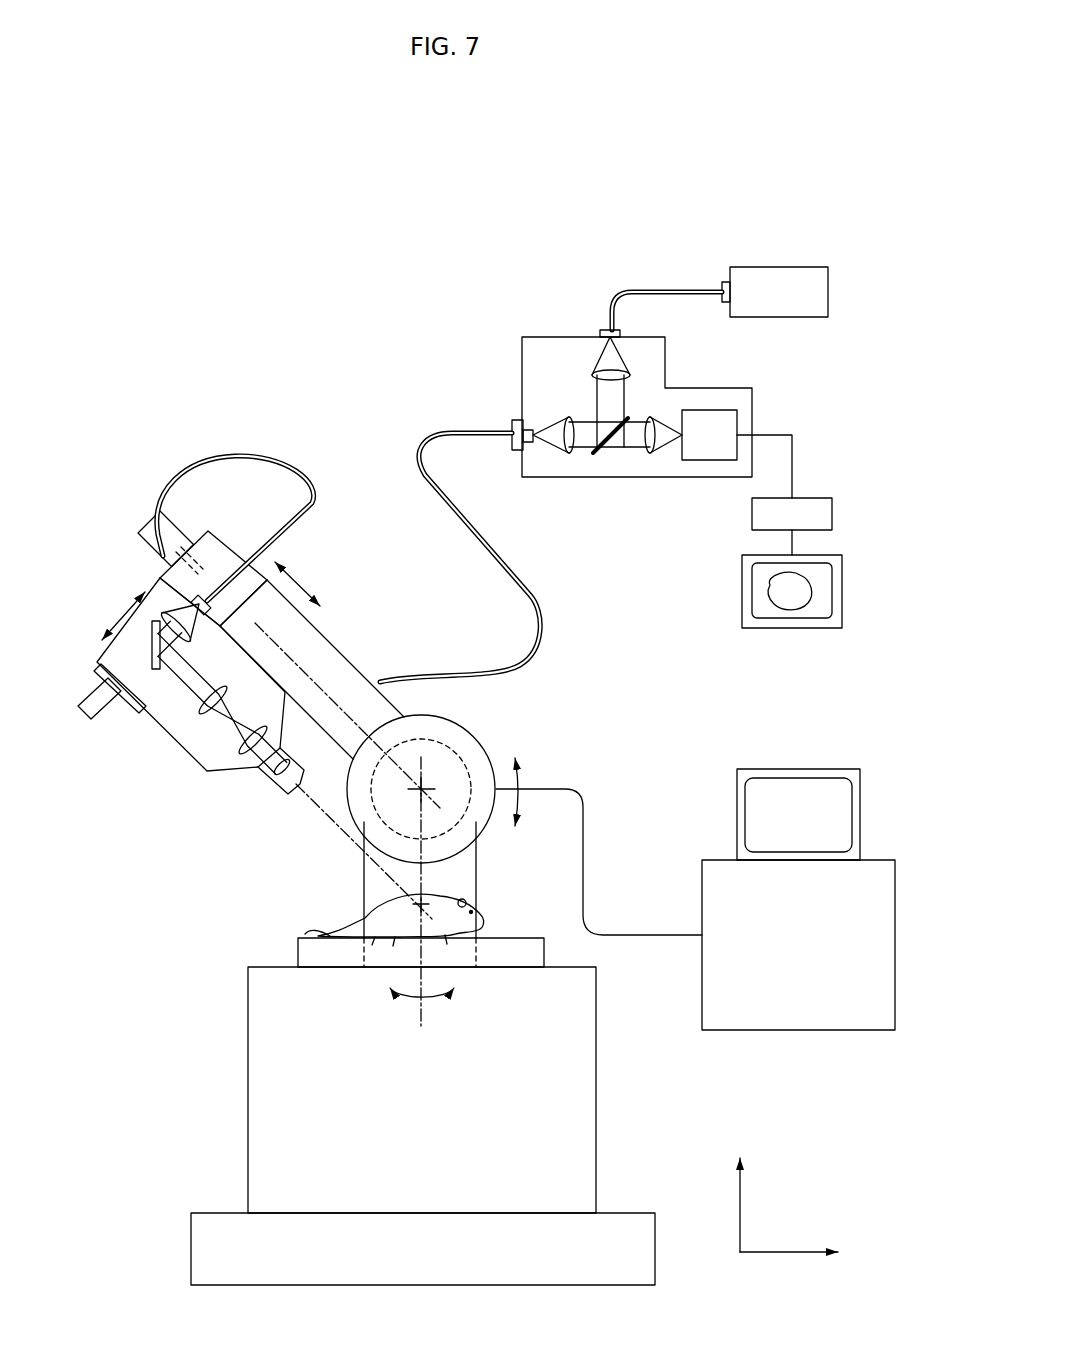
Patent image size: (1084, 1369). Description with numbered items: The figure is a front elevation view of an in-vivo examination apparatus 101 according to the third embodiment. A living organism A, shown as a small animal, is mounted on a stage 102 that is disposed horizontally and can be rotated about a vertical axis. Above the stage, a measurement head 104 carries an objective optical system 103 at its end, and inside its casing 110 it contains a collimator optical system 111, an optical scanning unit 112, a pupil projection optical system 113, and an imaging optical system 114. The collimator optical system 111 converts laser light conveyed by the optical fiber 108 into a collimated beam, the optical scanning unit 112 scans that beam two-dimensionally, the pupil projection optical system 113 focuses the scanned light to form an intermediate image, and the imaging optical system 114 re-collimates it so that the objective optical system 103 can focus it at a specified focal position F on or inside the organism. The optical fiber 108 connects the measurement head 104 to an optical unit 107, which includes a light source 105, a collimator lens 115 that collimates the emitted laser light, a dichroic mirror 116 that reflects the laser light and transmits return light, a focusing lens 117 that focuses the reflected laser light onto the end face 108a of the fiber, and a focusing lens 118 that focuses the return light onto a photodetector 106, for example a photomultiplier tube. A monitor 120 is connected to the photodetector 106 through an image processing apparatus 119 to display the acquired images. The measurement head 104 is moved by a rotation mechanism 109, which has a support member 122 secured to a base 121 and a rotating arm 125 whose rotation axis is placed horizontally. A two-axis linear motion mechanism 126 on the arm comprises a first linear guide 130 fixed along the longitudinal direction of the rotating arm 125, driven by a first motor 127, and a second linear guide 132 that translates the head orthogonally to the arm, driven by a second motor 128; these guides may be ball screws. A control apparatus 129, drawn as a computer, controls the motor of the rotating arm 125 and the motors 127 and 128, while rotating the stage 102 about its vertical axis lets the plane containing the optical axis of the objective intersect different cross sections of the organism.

The in-vivo examination apparatus 101 is at (228, 340).
The stage 102 is at (298, 954).
The objective optical system 103 is at (290, 790).
The measurement head 104 is at (167, 802).
The light source 105 is at (778, 266).
The photodetector 106 is at (716, 410).
The optical unit 107 is at (516, 328).
The optical fiber 108 is at (415, 447).
The end face of the optical fiber 108a is at (530, 450).
The rotation mechanism 109 is at (389, 632).
The casing 110 is at (177, 735).
The collimator optical system 111 is at (171, 617).
The optical scanning unit 112 is at (148, 675).
The pupil projection optical system 113 is at (196, 728).
The imaging optical system 114 is at (249, 754).
The collimator lens 115 is at (620, 378).
The dichroic mirror 116 is at (598, 463).
The focusing lens 117 is at (566, 428).
The focusing lens 118 is at (652, 462).
The image processing apparatus 119 is at (812, 497).
The monitor 120 is at (796, 630).
The base 121 is at (565, 1110).
The support member 122 is at (362, 895).
The rotating arm 125 is at (440, 718).
The two-axis linear motion mechanism 126 is at (304, 540).
The first motor 127 is at (153, 527).
The second motor 128 is at (97, 716).
The control apparatus 129 is at (842, 752).
The first linear guide 130 is at (221, 540).
The second linear guide 132 is at (246, 606).